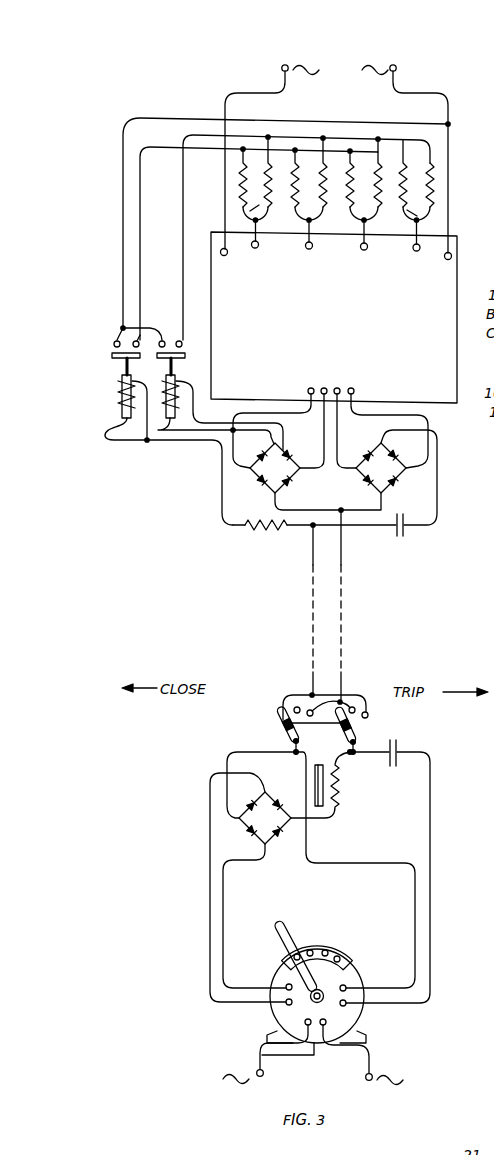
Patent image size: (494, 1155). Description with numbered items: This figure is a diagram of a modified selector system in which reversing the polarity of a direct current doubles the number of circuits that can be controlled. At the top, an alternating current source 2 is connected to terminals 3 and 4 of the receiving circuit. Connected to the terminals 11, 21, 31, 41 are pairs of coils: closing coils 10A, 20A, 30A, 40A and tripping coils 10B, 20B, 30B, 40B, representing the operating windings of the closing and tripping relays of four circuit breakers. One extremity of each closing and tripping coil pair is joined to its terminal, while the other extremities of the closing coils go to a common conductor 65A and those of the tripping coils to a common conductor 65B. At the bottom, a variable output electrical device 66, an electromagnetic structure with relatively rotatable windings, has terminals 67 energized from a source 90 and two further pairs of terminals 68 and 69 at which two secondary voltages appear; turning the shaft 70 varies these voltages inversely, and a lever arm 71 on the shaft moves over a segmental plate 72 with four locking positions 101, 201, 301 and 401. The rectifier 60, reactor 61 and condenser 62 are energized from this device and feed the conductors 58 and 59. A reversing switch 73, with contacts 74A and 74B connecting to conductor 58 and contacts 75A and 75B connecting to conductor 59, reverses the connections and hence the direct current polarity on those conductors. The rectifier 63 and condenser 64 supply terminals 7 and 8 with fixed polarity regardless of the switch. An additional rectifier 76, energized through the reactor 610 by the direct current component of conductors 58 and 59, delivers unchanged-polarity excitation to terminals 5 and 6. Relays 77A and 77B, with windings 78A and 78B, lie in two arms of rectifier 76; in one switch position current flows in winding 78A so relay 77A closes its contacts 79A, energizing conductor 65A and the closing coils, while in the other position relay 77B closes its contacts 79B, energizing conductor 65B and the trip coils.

The alternating current source 2 is at (339, 71).
The common conductor 65A is at (165, 144).
The common conductor 65B is at (213, 133).
The closing coil 10A is at (238, 182).
The tripping coil 10B is at (241, 213).
The closing coil 20A is at (292, 160).
The tripping coil 20B is at (315, 158).
The closing coil 30A is at (353, 160).
The tripping coil 30B is at (383, 162).
The closing coil 40A is at (422, 218).
The tripping coil 40B is at (436, 189).
The terminal 3 is at (213, 254).
The terminal 11 is at (255, 244).
The terminal 21 is at (309, 244).
The terminal 31 is at (362, 244).
The terminal 41 is at (415, 244).
The terminal 4 is at (490, 230).
The contacts 79A is at (113, 328).
The contacts 79B is at (172, 340).
The terminal 5 is at (309, 388).
The terminal 6 is at (322, 388).
The terminal 7 is at (340, 387).
The terminal 8 is at (354, 387).
The relay 77A is at (140, 474).
The relay 77B is at (188, 474).
The winding 78A is at (117, 392).
The winding 78B is at (163, 392).
The rectifier 76 is at (275, 468).
The rectifier 63 is at (381, 468).
The reactor 610 is at (247, 534).
The condenser 64 is at (411, 534).
The conductor 58 is at (297, 611).
The conductor 59 is at (349, 607).
The reversing switch 73 is at (258, 731).
The contact 75A is at (346, 711).
The contact 75B is at (308, 710).
The contact 74A is at (283, 716).
The contact 74B is at (366, 712).
The condenser 62 is at (407, 749).
The reactor 61 is at (327, 784).
The rectifier 60 is at (265, 818).
The variable output electrical device 66 is at (334, 922).
The segmental plate 72 is at (352, 960).
The lever arm 71 is at (307, 980).
The shaft 70 is at (321, 999).
The position 101 is at (283, 951).
The position 201 is at (309, 950).
The position 301 is at (326, 950).
The position 401 is at (341, 959).
The terminals 68 is at (286, 997).
The terminals 69 is at (347, 997).
The terminals 67 is at (261, 1055).
The source 90 is at (335, 1053).